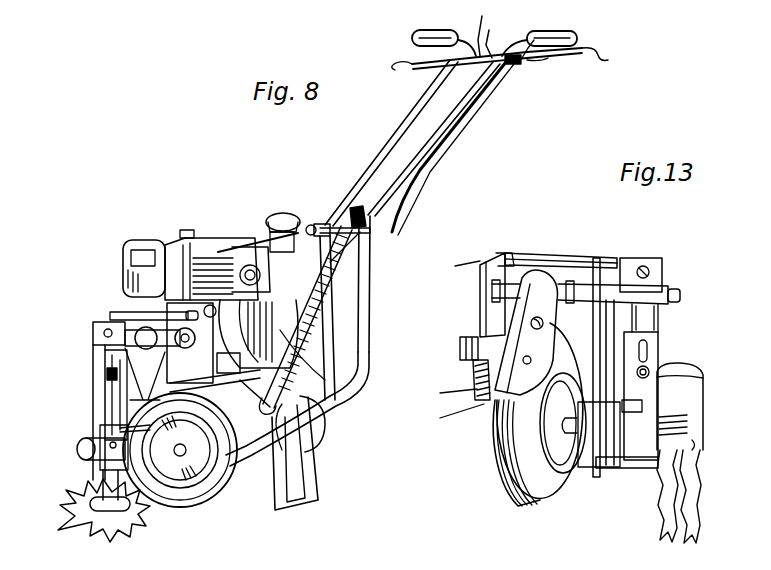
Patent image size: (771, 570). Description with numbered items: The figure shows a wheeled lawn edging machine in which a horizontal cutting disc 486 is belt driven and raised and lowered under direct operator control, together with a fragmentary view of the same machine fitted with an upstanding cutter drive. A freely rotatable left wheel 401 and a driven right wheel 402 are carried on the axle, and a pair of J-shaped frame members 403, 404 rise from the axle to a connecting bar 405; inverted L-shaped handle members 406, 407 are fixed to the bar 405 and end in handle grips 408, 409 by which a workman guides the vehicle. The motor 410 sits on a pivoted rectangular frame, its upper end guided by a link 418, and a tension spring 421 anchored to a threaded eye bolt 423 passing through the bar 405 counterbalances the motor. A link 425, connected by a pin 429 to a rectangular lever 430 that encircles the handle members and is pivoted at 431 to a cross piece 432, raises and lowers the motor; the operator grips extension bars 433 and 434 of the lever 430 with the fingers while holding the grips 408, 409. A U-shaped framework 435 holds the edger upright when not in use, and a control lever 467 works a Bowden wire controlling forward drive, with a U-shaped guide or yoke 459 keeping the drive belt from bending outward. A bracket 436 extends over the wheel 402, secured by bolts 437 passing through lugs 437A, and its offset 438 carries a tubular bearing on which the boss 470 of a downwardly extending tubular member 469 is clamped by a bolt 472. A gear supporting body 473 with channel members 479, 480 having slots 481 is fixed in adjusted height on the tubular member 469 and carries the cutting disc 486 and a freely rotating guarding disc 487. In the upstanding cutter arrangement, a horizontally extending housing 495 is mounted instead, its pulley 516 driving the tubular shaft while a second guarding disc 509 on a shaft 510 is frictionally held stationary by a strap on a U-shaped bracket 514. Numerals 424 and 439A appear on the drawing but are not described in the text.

In FIG. 8, the left wheel 401 is at (322, 440).
In FIG. 8, the right wheel 402 is at (198, 500).
In FIG. 8, the J-shaped frame member 403 is at (255, 453).
In FIG. 8, the J-shaped frame member 404 is at (352, 390).
In FIG. 8, the bar 405 is at (322, 225).
In FIG. 8, the handle member 406 is at (394, 140).
In FIG. 8, the handle member 407 is at (468, 118).
In FIG. 8, the handle grip 408 is at (440, 33).
In FIG. 8, the handle grip 409 is at (560, 35).
In FIG. 8, the motor 410 is at (167, 250).
In FIG. 8, the link 418 is at (260, 240).
In FIG. 8, the spring 421 is at (318, 300).
In FIG. 8, the eye bolt 423 is at (364, 250).
In FIG. 8, the clamp 424 is at (354, 208).
In FIG. 8, the link 425 is at (452, 143).
In FIG. 8, the pin 429 is at (513, 64).
In FIG. 8, the rectangular lever 430 is at (541, 60).
In FIG. 8, the pivot 431 is at (495, 50).
In FIG. 8, the cross piece 432 is at (529, 48).
In FIG. 8, the extension bar 433 is at (412, 64).
In FIG. 8, the extension bar 434 is at (592, 52).
In FIG. 8, the U-shaped framework 435 is at (310, 478).
In FIG. 8, the bracket 436 is at (122, 316).
In FIG. 13, the bracket 436 is at (574, 258).
In FIG. 8, the bolt 437 is at (164, 347).
In FIG. 13, the bolt 437 is at (500, 262).
In FIG. 13, the lug 437A is at (499, 262).
In FIG. 8, the offset 438 is at (98, 326).
In FIG. 13, the offset 438 is at (624, 262).
In FIG. 8, the pin 439A is at (180, 314).
In FIG. 13, the U-shaped guide or yoke 459 is at (480, 404).
In FIG. 8, the control lever 467 is at (485, 28).
In FIG. 8, the tubular member 469 is at (93, 358).
In FIG. 13, the tubular member 469 is at (656, 323).
In FIG. 13, the boss 470 is at (660, 292).
In FIG. 13, the bolt 472 is at (655, 265).
In FIG. 8, the gear supporting body 473 is at (100, 478).
In FIG. 8, the channel member 479 is at (105, 396).
In FIG. 13, the channel member 479 is at (650, 347).
In FIG. 8, the channel member 480 is at (103, 432).
In FIG. 8, the slot 481 is at (107, 374).
In FIG. 8, the cutting disc 486 is at (112, 532).
In FIG. 8, the guarding disc 487 is at (88, 524).
In FIG. 13, the housing 495 is at (624, 468).
In FIG. 13, the second guarding disc 509 is at (696, 505).
In FIG. 13, the shaft 510 is at (700, 467).
In FIG. 13, the U-shaped bracket 514 is at (630, 406).
In FIG. 13, the pulley 516 is at (578, 472).